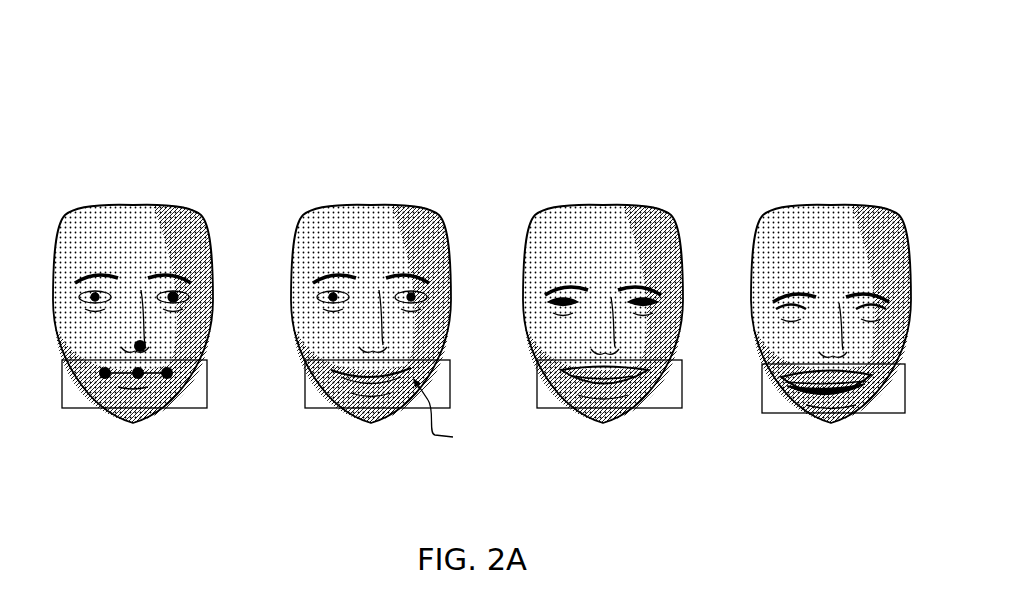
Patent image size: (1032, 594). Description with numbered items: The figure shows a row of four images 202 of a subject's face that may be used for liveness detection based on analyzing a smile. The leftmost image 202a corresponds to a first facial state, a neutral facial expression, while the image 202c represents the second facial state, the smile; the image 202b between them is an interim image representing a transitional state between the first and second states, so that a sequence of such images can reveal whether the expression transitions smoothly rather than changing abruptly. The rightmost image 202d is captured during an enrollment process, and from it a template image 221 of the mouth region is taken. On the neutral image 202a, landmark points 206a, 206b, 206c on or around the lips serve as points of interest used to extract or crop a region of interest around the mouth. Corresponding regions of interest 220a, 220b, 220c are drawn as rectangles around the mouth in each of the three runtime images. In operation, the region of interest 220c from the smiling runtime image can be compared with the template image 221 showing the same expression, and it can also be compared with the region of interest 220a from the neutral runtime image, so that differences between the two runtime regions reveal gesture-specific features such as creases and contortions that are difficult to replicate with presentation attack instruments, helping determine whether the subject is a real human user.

The images 202 is at (541, 64).
The image 202a is at (147, 167).
The image 202b is at (381, 160).
The image 202c is at (619, 164).
The image 202d is at (832, 164).
The point 206a is at (101, 387).
The point 206b is at (147, 390).
The point 206c is at (178, 382).
The region of interest 220a is at (132, 421).
The region of interest 220b is at (376, 420).
The region of interest 220c is at (607, 418).
The template image 221 is at (827, 424).